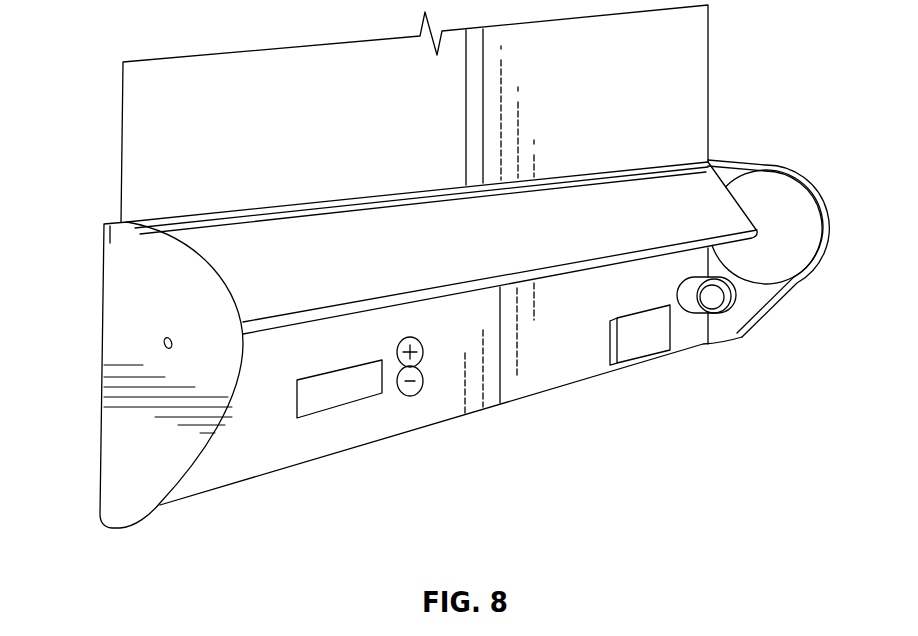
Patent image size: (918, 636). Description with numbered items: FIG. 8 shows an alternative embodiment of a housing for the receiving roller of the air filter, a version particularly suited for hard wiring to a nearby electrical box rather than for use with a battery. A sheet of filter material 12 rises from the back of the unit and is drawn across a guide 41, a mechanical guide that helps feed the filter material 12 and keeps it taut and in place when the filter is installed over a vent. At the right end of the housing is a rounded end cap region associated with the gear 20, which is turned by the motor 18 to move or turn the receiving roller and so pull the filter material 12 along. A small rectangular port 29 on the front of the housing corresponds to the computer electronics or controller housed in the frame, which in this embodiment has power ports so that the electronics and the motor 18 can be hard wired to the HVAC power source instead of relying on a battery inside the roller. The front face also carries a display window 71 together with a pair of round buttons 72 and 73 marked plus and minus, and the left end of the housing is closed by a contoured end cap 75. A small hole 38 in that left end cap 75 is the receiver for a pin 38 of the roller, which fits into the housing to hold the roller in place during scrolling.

The filter material 12 is at (693, 97).
The guides 41 is at (228, 214).
The gear 20 is at (800, 222).
The motor 18 is at (730, 300).
The computer electronics 29 is at (642, 345).
The display 71 is at (348, 390).
The increase button 72 is at (412, 337).
The decrease button 73 is at (408, 395).
The left end cap 75 is at (117, 292).
The pins 38 is at (170, 338).